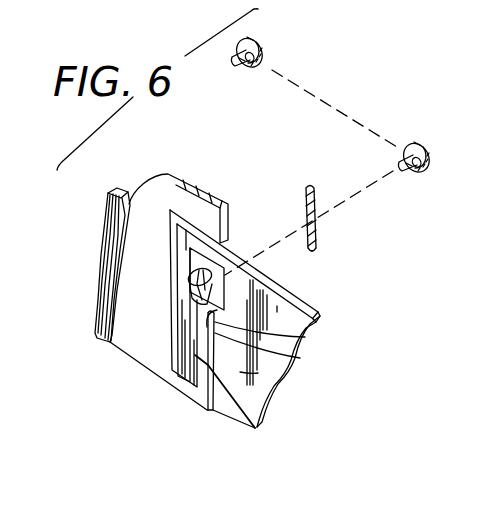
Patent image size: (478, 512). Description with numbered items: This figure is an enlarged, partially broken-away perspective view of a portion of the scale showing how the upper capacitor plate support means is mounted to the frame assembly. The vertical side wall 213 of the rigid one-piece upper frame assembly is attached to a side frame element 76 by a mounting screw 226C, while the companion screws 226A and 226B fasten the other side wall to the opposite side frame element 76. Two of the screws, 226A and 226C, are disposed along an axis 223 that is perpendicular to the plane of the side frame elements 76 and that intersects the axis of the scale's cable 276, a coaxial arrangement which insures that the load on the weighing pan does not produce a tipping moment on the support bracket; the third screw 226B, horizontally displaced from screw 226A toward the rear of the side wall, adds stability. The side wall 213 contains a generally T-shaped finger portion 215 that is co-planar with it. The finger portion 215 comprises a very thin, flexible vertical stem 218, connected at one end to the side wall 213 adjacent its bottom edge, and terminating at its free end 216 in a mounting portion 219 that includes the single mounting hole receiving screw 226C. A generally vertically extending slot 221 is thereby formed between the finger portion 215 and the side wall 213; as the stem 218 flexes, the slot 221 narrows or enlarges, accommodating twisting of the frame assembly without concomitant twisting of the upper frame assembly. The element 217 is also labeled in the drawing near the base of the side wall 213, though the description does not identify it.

The side wall 213 is at (140, 202).
The finger portion 215 is at (264, 420).
The free end 216 is at (214, 290).
The base 217 is at (180, 388).
The vertical stem 218 is at (300, 358).
The mounting portion 219 is at (206, 283).
The slot 221 is at (183, 330).
The axis 223 is at (318, 207).
The mounting screw 226A is at (447, 115).
The mounting screw 226B is at (272, 50).
The mounting screw 226C is at (305, 337).
The cable 276 is at (316, 238).
The side frame element 76 is at (258, 373).